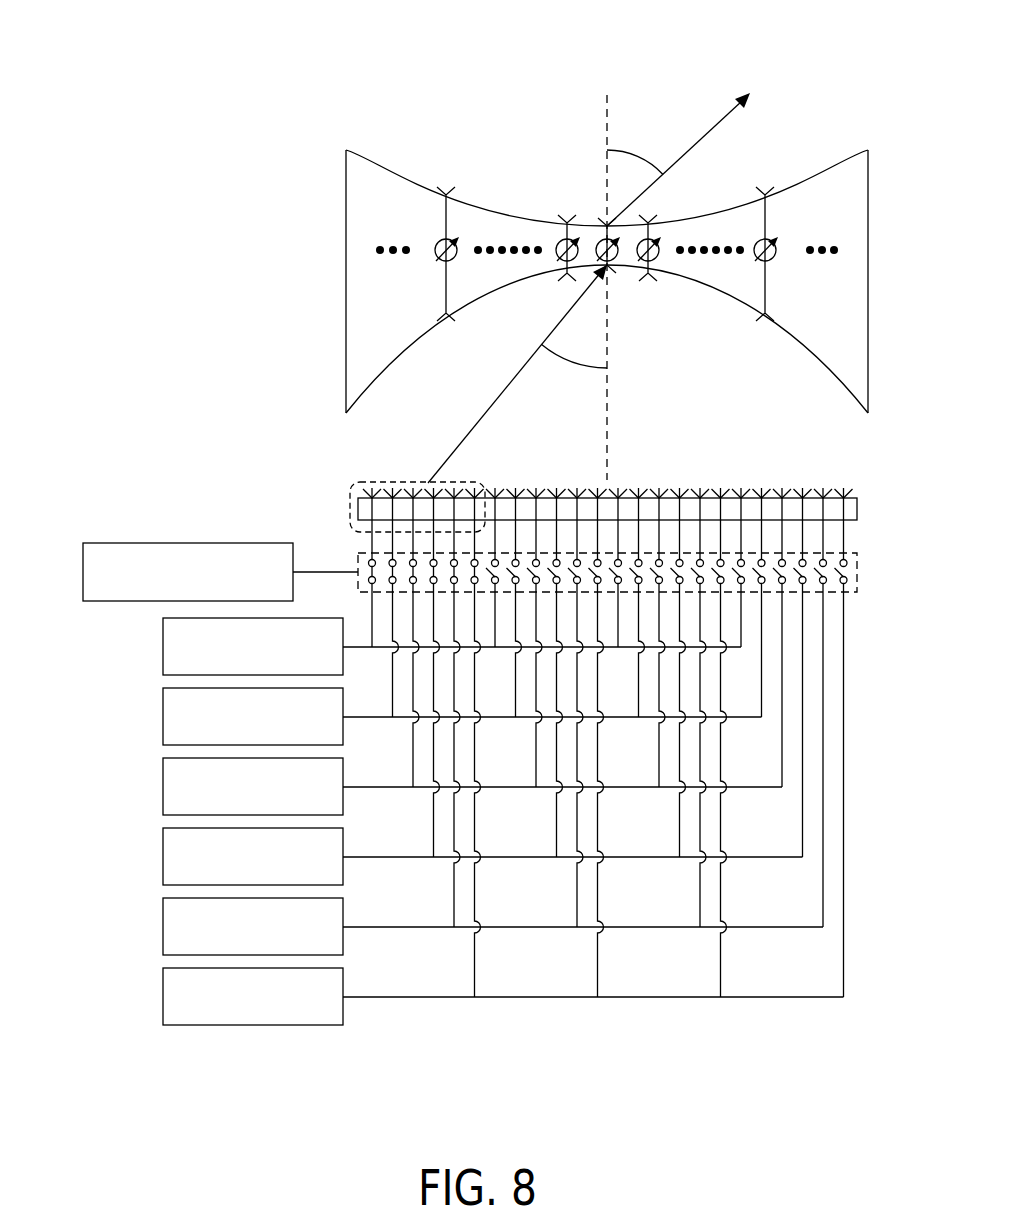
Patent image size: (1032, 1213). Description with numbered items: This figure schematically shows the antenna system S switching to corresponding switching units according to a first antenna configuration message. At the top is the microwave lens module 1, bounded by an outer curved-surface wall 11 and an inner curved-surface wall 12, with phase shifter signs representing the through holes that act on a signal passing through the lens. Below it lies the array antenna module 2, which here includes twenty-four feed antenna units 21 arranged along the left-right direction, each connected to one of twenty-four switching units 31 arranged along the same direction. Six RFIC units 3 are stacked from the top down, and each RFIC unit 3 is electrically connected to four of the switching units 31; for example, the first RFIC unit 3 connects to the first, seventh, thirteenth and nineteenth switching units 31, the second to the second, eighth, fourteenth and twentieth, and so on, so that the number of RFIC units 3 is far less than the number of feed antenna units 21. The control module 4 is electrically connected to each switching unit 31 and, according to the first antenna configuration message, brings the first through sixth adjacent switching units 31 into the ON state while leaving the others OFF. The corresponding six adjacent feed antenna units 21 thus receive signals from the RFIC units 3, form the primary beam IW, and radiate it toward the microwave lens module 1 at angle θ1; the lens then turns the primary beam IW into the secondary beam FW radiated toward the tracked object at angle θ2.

The antenna system S is at (214, 50).
The microwave lens module 1 is at (334, 264).
The outer curved-surface wall 11 is at (418, 181).
The inner curved-surface wall 12 is at (394, 362).
The array antenna module 2 is at (346, 497).
The feed antenna unit 21 is at (842, 512).
The switching unit 31 is at (348, 557).
The RFIC unit 3 is at (163, 997).
The control module 4 is at (83, 572).
The secondary beam FW is at (705, 130).
The primary beam IW is at (502, 390).